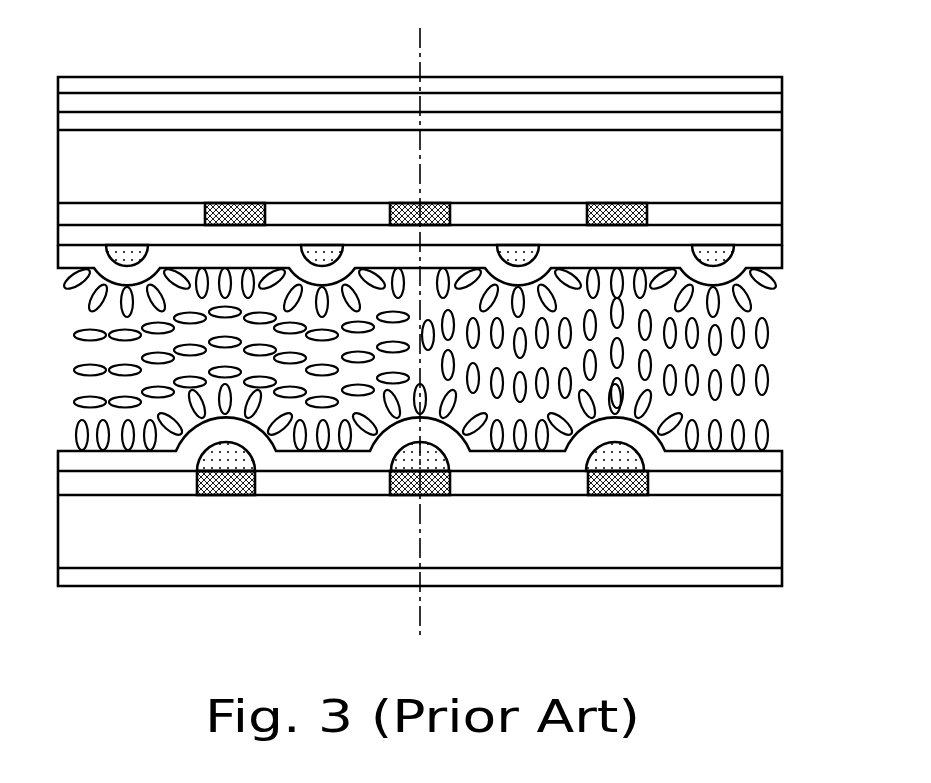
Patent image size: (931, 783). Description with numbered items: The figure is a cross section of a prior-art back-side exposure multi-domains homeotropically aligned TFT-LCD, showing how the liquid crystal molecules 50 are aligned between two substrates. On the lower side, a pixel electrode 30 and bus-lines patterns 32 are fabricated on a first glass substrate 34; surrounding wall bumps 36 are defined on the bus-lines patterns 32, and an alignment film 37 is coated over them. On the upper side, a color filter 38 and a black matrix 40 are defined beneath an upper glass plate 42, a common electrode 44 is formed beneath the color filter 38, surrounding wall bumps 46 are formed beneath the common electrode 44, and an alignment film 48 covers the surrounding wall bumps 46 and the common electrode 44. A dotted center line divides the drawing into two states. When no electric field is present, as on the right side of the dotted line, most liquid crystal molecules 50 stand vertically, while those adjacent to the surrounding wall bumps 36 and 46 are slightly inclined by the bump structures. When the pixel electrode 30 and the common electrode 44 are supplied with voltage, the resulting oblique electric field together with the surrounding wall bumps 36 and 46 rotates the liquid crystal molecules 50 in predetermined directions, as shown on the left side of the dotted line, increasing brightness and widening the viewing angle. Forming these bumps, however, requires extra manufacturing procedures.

The pixel electrode 30 is at (783, 483).
The bus-lines patterns 32 is at (615, 495).
The first glass substrate 34 is at (783, 552).
The surrounding wall bumps 36 is at (638, 457).
The alignment film 37 is at (783, 458).
The color filter 38 is at (783, 208).
The black matrix 40 is at (619, 205).
The upper glass plate 42 is at (783, 142).
The common electrode 44 is at (783, 232).
The surrounding wall bumps 46 is at (717, 250).
The alignment film 48 is at (783, 256).
The liquid crystal molecules 50 is at (766, 377).